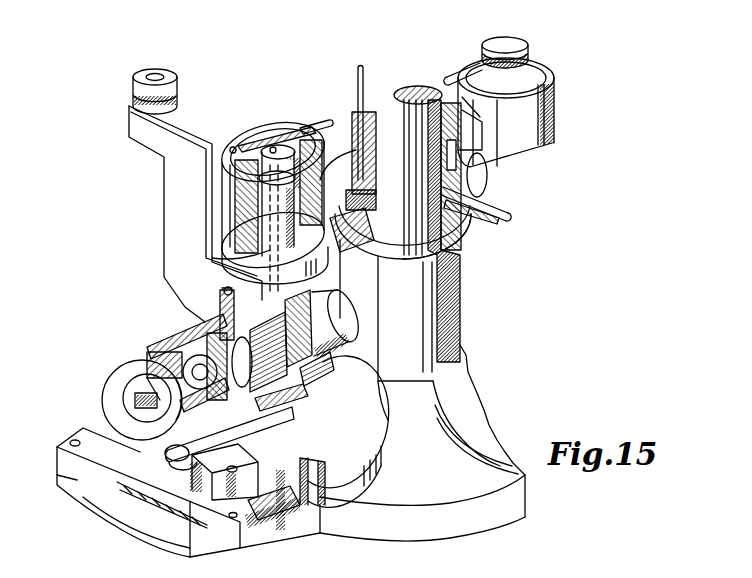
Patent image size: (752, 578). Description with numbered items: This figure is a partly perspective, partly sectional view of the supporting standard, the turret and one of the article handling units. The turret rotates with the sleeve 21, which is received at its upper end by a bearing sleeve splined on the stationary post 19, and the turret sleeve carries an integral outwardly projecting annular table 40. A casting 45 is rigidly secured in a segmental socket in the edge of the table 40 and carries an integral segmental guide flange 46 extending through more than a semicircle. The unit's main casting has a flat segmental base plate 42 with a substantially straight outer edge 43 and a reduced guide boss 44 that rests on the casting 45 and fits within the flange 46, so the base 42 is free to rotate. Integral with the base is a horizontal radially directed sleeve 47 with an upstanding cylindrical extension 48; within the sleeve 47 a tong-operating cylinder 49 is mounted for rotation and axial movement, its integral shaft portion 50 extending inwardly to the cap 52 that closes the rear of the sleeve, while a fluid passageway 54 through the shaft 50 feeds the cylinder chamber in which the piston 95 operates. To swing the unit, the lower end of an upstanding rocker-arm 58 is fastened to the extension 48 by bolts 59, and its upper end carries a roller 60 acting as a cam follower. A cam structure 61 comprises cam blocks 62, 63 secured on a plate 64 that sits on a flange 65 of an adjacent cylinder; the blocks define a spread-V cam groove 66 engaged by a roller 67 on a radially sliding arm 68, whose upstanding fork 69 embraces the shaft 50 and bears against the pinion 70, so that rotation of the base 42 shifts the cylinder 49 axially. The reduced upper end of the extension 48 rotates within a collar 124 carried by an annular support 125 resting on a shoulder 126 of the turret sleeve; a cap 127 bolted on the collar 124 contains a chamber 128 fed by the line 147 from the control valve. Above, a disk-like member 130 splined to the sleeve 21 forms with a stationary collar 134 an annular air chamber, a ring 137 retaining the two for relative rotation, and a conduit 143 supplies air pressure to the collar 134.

The post 19 is at (417, 88).
The sleeve 21 is at (404, 92).
The supporting shelf or table 40 is at (439, 514).
The base plate 42 is at (367, 410).
The straight outer edge 43 is at (285, 446).
The guide boss 44 is at (322, 502).
The casting 45 is at (273, 424).
The guide flange 46 is at (368, 470).
The sleeve 47 is at (190, 350).
The cylindrical extension 48 is at (320, 266).
The tong-operating cylinder 49 is at (160, 352).
The shaft portion 50 is at (219, 304).
The cap 52 is at (342, 302).
The fluid passageway 54 is at (212, 345).
The rocker-arm 58 is at (181, 218).
The bolts 59 is at (225, 287).
The roller 60 is at (178, 86).
The cam structure 61 is at (53, 440).
The cam block 62 is at (57, 456).
The cam block 63 is at (248, 526).
The plate 64 is at (57, 479).
The flange 65 is at (115, 516).
The cam groove 66 is at (198, 546).
The roller 67 is at (190, 478).
The arm 68 is at (282, 401).
The fork 69 is at (329, 368).
The pinion 70 is at (296, 330).
The piston 95 is at (143, 396).
The collar 124 is at (553, 93).
The annular support 125 is at (366, 225).
The shoulder 126 is at (459, 263).
The cap 127 is at (255, 142).
The chamber 128 is at (285, 132).
The disk-like member 130 is at (490, 213).
The collar 134 is at (470, 141).
The ring 137 is at (490, 182).
The conduit 143 is at (357, 73).
The line 147 is at (315, 126).